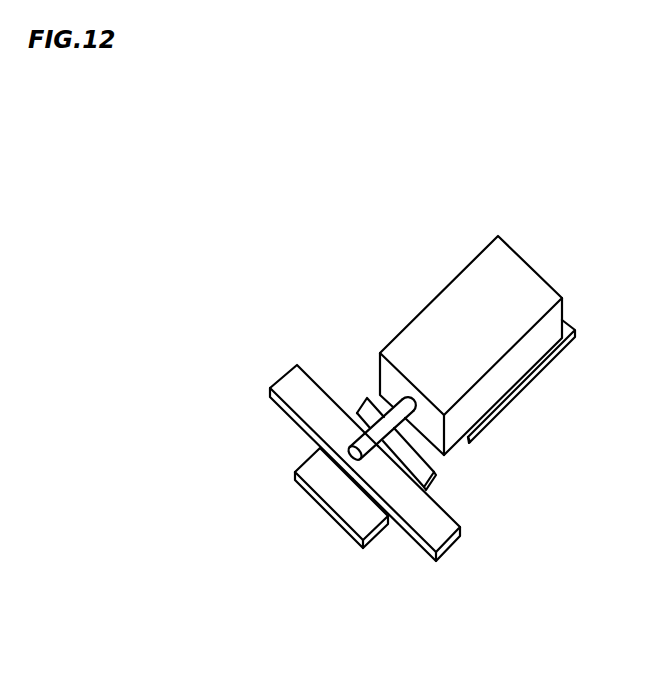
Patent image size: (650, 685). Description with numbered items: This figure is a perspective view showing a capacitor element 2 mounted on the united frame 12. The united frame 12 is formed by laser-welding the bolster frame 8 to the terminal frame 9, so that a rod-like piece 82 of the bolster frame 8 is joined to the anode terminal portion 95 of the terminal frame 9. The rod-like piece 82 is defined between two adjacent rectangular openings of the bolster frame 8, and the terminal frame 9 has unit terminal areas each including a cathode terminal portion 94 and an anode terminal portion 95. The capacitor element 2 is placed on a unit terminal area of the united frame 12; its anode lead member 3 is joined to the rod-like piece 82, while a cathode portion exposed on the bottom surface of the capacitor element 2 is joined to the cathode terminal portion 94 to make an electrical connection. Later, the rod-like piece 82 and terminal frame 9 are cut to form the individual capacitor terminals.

The capacitor element 2 is at (473, 281).
The anode lead member 3 is at (376, 421).
The bolster frame 8 is at (442, 534).
The rod-like piece 82 is at (310, 393).
The terminal frame 9 is at (363, 515).
The cathode terminal portion 94 is at (507, 403).
The anode terminal portion 95 is at (422, 470).
The united frame 12 is at (522, 568).